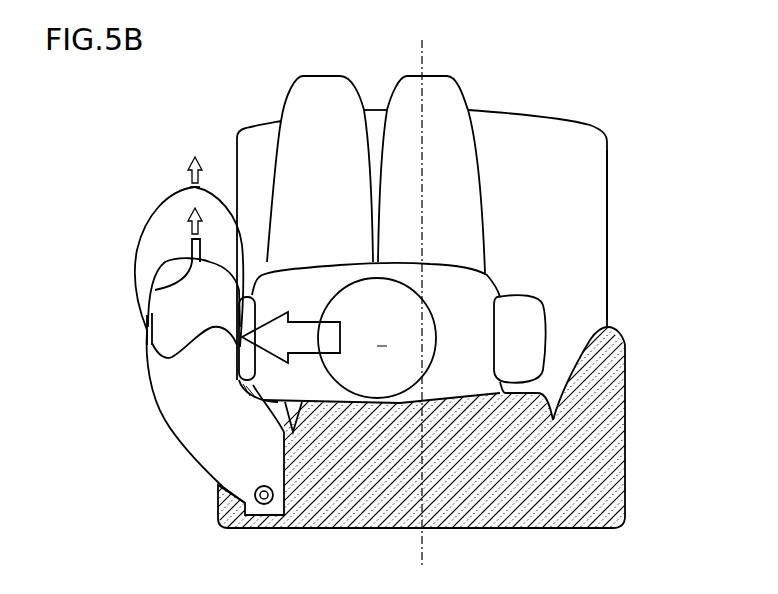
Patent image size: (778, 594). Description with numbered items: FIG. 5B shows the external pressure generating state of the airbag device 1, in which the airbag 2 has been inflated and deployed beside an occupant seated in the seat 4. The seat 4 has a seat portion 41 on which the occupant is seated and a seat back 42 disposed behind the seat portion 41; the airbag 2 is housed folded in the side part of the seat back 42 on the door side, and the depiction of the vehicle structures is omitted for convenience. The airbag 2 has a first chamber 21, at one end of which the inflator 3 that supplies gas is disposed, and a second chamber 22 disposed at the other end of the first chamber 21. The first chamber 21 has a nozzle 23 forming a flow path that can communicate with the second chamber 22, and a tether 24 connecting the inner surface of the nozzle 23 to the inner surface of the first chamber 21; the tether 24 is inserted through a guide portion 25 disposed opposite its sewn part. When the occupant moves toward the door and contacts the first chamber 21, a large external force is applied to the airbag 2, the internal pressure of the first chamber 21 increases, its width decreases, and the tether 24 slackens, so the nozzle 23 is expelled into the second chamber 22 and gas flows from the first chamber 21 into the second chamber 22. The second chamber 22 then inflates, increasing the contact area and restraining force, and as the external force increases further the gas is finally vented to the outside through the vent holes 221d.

The airbag device 1 is at (288, 474).
The airbag 2 is at (133, 247).
The inflator 3 is at (263, 506).
The seat 4 is at (642, 152).
The seat portion 41 is at (608, 231).
The seat back 42 is at (626, 428).
The first chamber 21 is at (190, 437).
The second chamber 22 is at (161, 218).
The nozzle 23 is at (190, 252).
The tether 24 is at (177, 358).
The guide portion 25 is at (153, 325).
The vent hole 221d is at (190, 186).